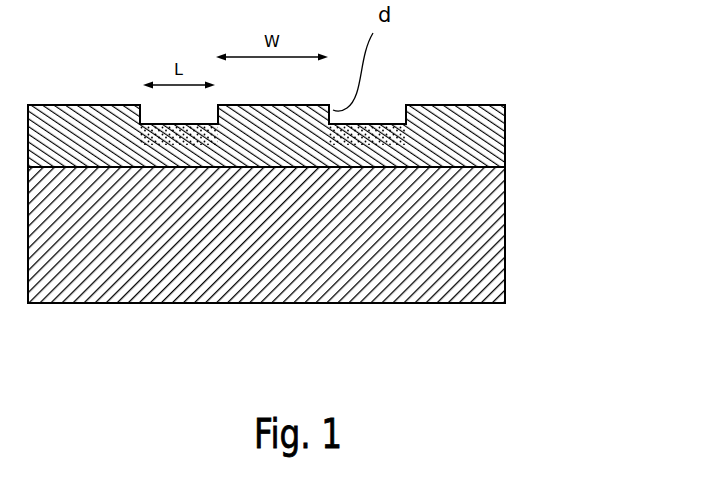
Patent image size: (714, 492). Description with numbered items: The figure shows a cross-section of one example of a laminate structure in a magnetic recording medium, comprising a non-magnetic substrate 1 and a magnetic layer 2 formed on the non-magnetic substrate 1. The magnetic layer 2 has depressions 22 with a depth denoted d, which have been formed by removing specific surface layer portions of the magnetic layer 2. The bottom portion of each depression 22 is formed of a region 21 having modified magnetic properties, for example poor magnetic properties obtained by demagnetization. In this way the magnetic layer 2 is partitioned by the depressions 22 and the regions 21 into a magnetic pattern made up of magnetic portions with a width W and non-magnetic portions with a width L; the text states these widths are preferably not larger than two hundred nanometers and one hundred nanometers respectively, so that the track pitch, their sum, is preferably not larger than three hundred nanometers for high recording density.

The non-magnetic substrate 1 is at (482, 227).
The magnetic layer 2 is at (490, 137).
The regions having modified magnetic properties 21 is at (112, 122).
The depressions 22 is at (373, 107).